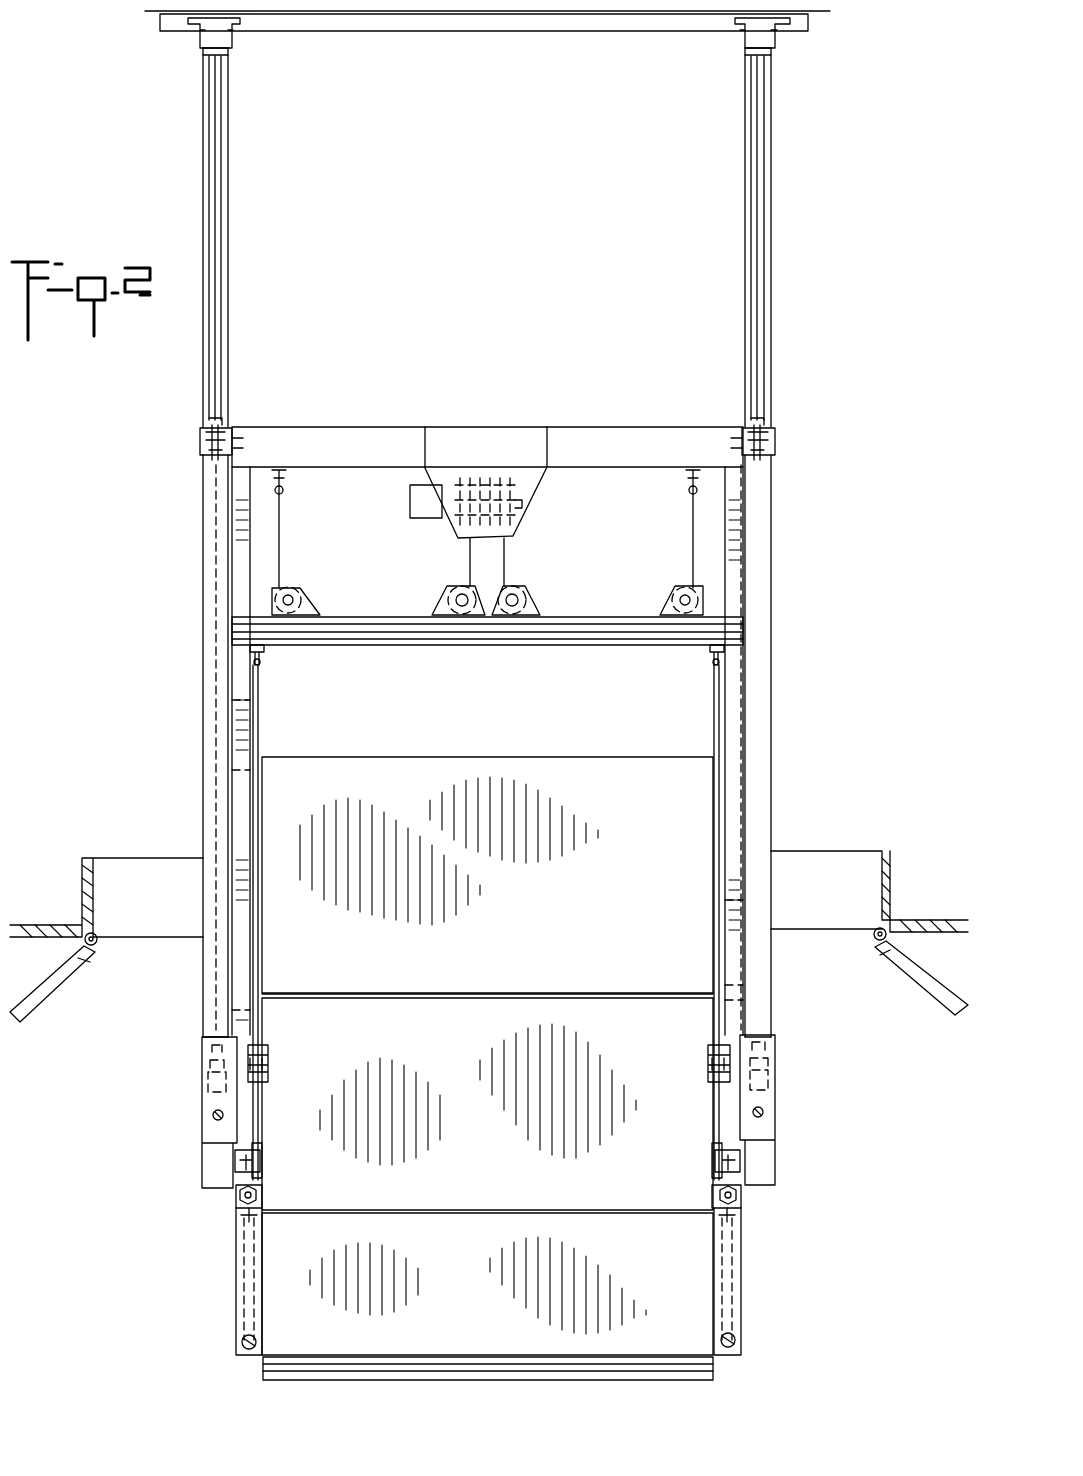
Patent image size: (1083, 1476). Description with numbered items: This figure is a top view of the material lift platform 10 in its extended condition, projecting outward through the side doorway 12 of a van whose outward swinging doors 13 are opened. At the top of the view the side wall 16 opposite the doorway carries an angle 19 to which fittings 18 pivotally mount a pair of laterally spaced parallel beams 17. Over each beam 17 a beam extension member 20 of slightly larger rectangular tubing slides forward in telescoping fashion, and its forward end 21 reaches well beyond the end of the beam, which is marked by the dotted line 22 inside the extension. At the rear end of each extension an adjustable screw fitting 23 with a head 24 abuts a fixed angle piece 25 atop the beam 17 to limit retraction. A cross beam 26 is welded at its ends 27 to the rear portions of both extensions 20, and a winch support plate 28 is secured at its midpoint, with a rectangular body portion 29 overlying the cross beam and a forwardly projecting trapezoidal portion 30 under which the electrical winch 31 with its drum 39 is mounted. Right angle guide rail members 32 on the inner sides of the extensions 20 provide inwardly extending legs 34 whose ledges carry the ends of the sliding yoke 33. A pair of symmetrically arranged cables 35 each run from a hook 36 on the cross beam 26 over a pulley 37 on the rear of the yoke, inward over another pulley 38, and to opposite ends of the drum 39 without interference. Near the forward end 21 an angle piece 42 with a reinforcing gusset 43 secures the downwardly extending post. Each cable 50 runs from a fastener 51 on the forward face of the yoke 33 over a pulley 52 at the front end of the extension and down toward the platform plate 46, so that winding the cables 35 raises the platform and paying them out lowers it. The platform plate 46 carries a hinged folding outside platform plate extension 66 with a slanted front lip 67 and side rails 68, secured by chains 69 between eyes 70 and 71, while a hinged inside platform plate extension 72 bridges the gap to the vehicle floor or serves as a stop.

The material lift platform 10 is at (161, 1220).
The side doorway 12 is at (170, 954).
The outward swinging doors 13 is at (68, 996).
The side wall 16 is at (495, 20).
The beams 17 is at (228, 215).
The fittings 18 is at (232, 38).
The angle 19 is at (627, 24).
The beam extension member 20 is at (210, 708).
The forward ends 21 is at (210, 1172).
The end of beam 22 is at (205, 665).
The adjustable screw fitting 23 is at (188, 449).
The head 24 is at (222, 420).
The fixed angle piece 25 is at (205, 52).
The cross beam 26 is at (393, 427).
The ends 27 is at (240, 440).
The winch support plate 28 is at (499, 413).
The rectangular body portion 29 is at (525, 437).
The trapezoidal portion 30 is at (540, 485).
The electrical winch 31 is at (442, 532).
The guide rail members 32 is at (240, 547).
The sliding yoke 33 is at (605, 640).
The inwardly extending leg 34 is at (240, 515).
The cables 35 is at (470, 558).
The hook 36 is at (286, 488).
The pulley 37 is at (668, 590).
The pulley 38 is at (448, 598).
The drum 39 is at (530, 523).
The angle piece 42 is at (268, 1050).
The reinforcing gusset 43 is at (258, 1066).
The platform plate 46 is at (522, 1056).
The cable 50 is at (262, 716).
The fastener 51 is at (262, 660).
The pulley 52 is at (262, 1152).
The outside platform plate extension 66 is at (517, 1256).
The front lip 67 is at (275, 1368).
The side rails 68 is at (237, 1305).
The chains 69 is at (248, 1280).
The eyes 70 is at (248, 1218).
The eyes 71 is at (240, 1342).
The inside platform plate extension 72 is at (493, 757).